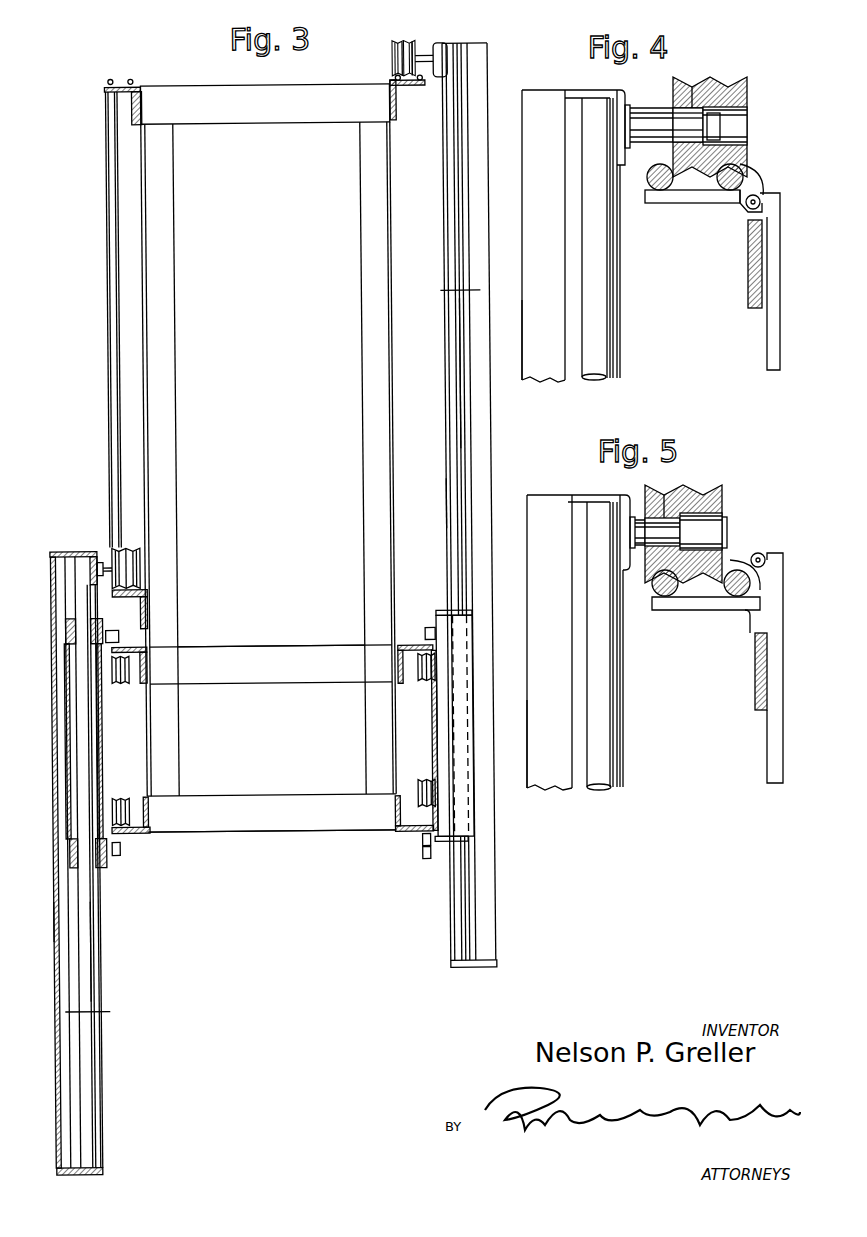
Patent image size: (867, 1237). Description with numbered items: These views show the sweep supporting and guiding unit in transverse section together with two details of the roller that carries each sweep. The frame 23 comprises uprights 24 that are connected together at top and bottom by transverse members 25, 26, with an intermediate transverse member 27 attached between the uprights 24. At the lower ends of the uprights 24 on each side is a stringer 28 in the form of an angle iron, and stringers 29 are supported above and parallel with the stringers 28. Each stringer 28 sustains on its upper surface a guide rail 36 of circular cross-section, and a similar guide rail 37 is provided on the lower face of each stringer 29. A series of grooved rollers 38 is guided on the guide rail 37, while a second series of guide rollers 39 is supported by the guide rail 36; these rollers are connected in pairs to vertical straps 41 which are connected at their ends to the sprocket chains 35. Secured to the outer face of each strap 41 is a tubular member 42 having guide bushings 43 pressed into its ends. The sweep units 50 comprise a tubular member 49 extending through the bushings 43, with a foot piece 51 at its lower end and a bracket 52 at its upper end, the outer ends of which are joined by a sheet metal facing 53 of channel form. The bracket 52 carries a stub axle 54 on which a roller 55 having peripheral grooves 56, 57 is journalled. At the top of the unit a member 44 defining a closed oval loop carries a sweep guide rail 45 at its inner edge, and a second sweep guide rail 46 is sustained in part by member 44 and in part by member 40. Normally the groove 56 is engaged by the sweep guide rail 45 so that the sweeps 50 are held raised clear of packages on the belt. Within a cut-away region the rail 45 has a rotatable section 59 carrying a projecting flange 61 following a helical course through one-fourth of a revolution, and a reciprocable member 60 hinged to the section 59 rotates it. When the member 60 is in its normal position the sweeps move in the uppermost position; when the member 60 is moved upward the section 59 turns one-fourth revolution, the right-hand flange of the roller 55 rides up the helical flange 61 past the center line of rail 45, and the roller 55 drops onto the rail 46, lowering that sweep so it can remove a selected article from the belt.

In FIG. 3, the frame 23 is at (264, 833).
In FIG. 3, the uprights 24 is at (176, 422).
In FIG. 3, the transverse member 25 is at (251, 125).
In FIG. 3, the transverse member 26 is at (249, 796).
In FIG. 3, the intermediate transverse member 27 is at (250, 646).
In FIG. 3, the stringer 28 is at (146, 835).
In FIG. 3, the stringer 29 is at (145, 664).
In FIG. 3, the sprocket chains 35 is at (426, 629).
In FIG. 3, the guide rail 36 is at (116, 846).
In FIG. 3, the guide rail 37 is at (121, 641).
In FIG. 3, the grooved rollers 38 is at (120, 682).
In FIG. 3, the guide rollers 39 is at (117, 796).
In FIG. 3, the member 40 is at (109, 381).
In FIG. 3, the vertical straps 41 is at (99, 754).
In FIG. 3, the tubular member 42 is at (60, 740).
In FIG. 3, the guide bushings 43 is at (69, 618).
In FIG. 3, the member 44 is at (397, 106).
In FIG. 4, the member 44 is at (748, 268).
In FIG. 5, the member 44 is at (755, 675).
In FIG. 3, the sweep guide rail 45 is at (135, 80).
In FIG. 3, the sweep guide rail 46 is at (114, 78).
In FIG. 4, the sweep guide rail 46 is at (650, 205).
In FIG. 5, the sweep guide rail 46 is at (663, 608).
In FIG. 3, the tubular member 49 is at (85, 955).
In FIG. 4, the tubular member 49 is at (621, 315).
In FIG. 5, the tubular member 49 is at (624, 748).
In FIG. 3, the sweep units 50 is at (49, 920).
In FIG. 3, the foot piece 51 is at (91, 1166).
In FIG. 3, the bracket 52 is at (87, 549).
In FIG. 4, the bracket 52 is at (582, 90).
In FIG. 5, the bracket 52 is at (580, 495).
In FIG. 3, the sheet metal facing 53 is at (272, 652).
In FIG. 4, the sheet metal facing 53 is at (545, 375).
In FIG. 5, the sheet metal facing 53 is at (558, 788).
In FIG. 3, the stub axle 54 is at (444, 48).
In FIG. 4, the stub axle 54 is at (645, 108).
In FIG. 5, the stub axle 54 is at (703, 530).
In FIG. 3, the roller 55 is at (137, 552).
In FIG. 4, the roller 55 is at (748, 90).
In FIG. 5, the roller 55 is at (723, 495).
In FIG. 3, the peripheral groove 56 is at (406, 43).
In FIG. 4, the peripheral groove 56 is at (725, 78).
In FIG. 5, the peripheral groove 56 is at (700, 485).
In FIG. 3, the peripheral groove 57 is at (416, 43).
In FIG. 4, the peripheral groove 57 is at (695, 80).
In FIG. 5, the peripheral groove 57 is at (655, 485).
In FIG. 4, the rotatable section 59 is at (725, 190).
In FIG. 5, the rotatable section 59 is at (735, 600).
In FIG. 4, the reciprocable member 60 is at (767, 342).
In FIG. 5, the reciprocable member 60 is at (767, 742).
In FIG. 4, the projecting flange 61 is at (752, 190).
In FIG. 5, the projecting flange 61 is at (745, 563).